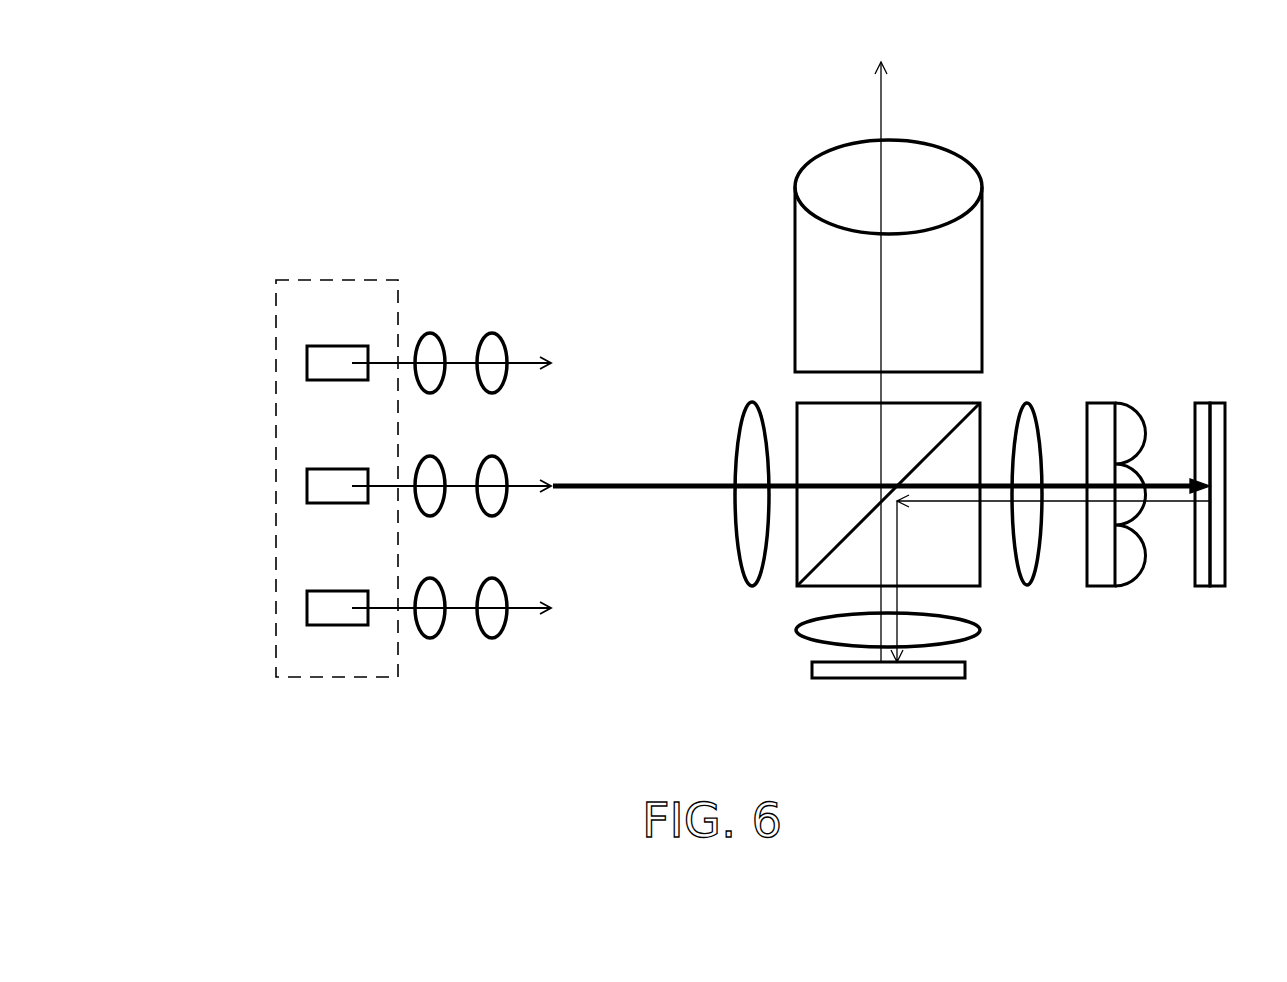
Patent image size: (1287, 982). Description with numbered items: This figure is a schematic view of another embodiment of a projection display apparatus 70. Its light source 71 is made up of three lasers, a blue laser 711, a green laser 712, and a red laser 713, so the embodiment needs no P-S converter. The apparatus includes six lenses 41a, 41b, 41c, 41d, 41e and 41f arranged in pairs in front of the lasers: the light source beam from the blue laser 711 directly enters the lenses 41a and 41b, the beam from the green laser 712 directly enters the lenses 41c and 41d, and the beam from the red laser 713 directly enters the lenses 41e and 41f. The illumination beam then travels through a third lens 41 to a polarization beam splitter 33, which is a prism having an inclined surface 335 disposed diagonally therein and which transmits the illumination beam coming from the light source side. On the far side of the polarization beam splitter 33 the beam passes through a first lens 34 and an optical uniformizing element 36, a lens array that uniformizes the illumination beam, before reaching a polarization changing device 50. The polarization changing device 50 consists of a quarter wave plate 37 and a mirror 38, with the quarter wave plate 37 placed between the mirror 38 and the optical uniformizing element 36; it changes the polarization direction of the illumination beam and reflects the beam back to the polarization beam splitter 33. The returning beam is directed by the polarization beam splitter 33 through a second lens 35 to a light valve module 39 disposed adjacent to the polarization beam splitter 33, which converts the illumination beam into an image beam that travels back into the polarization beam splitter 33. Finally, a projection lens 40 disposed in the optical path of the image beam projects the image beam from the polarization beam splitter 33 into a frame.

The projection display apparatus 70 is at (307, 94).
The light source 71 is at (276, 291).
The blue laser 711 is at (307, 363).
The green laser 712 is at (307, 486).
The red laser 713 is at (307, 608).
The lens 41a is at (445, 352).
The lens 41b is at (507, 352).
The lens 41c is at (445, 475).
The lens 41d is at (507, 475).
The lens 41e is at (445, 597).
The lens 41f is at (507, 597).
The third lens 41 is at (752, 587).
The polarization beam splitter 33 is at (926, 511).
The inclined surface 335 is at (965, 415).
The projection lens 40 is at (930, 146).
The second lens 35 is at (977, 640).
The light valve module 39 is at (887, 680).
The first lens 34 is at (1027, 587).
The optical uniformizing element 36 is at (1100, 587).
The quarter wave plate 37 is at (1200, 587).
The mirror 38 is at (1220, 587).
The polarization changing device 50 is at (1212, 562).